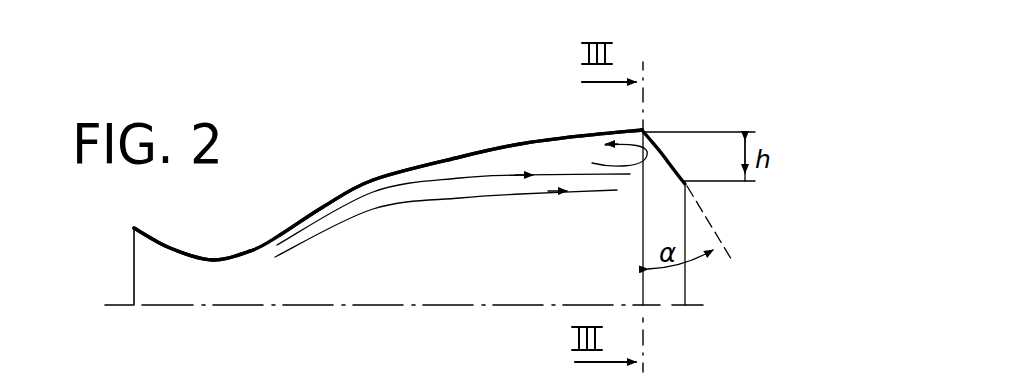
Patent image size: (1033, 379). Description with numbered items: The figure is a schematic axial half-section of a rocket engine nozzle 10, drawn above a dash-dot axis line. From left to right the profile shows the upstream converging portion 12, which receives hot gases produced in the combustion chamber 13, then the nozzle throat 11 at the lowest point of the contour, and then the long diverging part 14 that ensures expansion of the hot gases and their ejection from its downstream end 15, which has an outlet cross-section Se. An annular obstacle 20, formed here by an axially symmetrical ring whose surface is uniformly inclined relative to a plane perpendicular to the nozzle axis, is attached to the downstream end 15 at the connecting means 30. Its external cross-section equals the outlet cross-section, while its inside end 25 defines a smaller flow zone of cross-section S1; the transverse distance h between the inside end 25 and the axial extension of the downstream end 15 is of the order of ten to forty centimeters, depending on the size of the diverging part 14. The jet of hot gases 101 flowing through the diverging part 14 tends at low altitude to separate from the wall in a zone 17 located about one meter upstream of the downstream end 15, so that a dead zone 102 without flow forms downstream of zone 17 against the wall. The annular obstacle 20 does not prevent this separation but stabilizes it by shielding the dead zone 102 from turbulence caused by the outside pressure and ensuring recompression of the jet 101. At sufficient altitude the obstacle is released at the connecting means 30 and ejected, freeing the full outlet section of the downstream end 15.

The nozzle 10 is at (375, 176).
The nozzle throat 11 is at (221, 262).
The upstream converging portion 12 is at (172, 246).
The combustion chamber 13 is at (142, 277).
The diverging part 14 is at (510, 143).
The downstream end of the diverging part 15 is at (643, 252).
The zone of jet separation 17 is at (324, 207).
The annular obstacle 20 is at (661, 159).
The inside end of the annular obstacle 25 is at (688, 185).
The connecting means 30 is at (646, 130).
The jet of hot gases 101 is at (510, 197).
The dead zone 102 is at (634, 129).